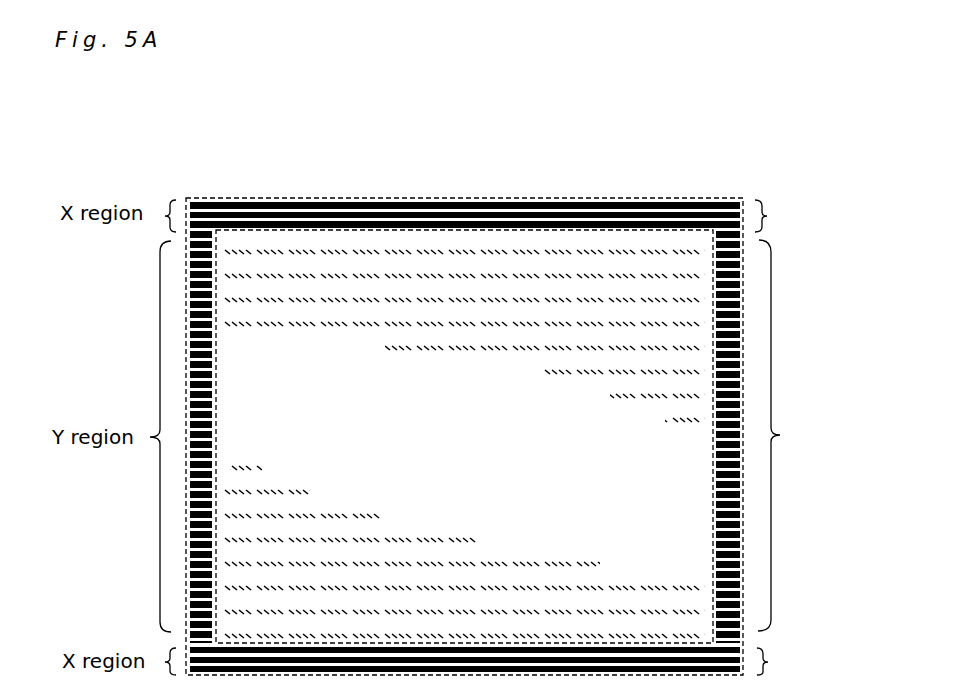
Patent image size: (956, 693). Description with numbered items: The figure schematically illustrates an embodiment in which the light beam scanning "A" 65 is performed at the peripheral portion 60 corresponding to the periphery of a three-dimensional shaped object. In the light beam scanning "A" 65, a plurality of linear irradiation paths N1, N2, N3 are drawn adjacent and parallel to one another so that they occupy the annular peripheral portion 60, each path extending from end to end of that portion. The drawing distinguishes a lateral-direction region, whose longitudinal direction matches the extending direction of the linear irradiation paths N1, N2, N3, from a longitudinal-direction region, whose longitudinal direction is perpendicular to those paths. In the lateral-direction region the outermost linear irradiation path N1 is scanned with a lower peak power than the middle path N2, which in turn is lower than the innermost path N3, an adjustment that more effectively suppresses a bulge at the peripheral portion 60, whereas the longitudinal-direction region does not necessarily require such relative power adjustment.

The peripheral portion 60 is at (743, 285).
The light beam scanning "A" 65 is at (277, 203).
The linear irradiation path N1 is at (493, 206).
The linear irradiation path N2 is at (515, 215).
The linear irradiation path N3 is at (505, 232).